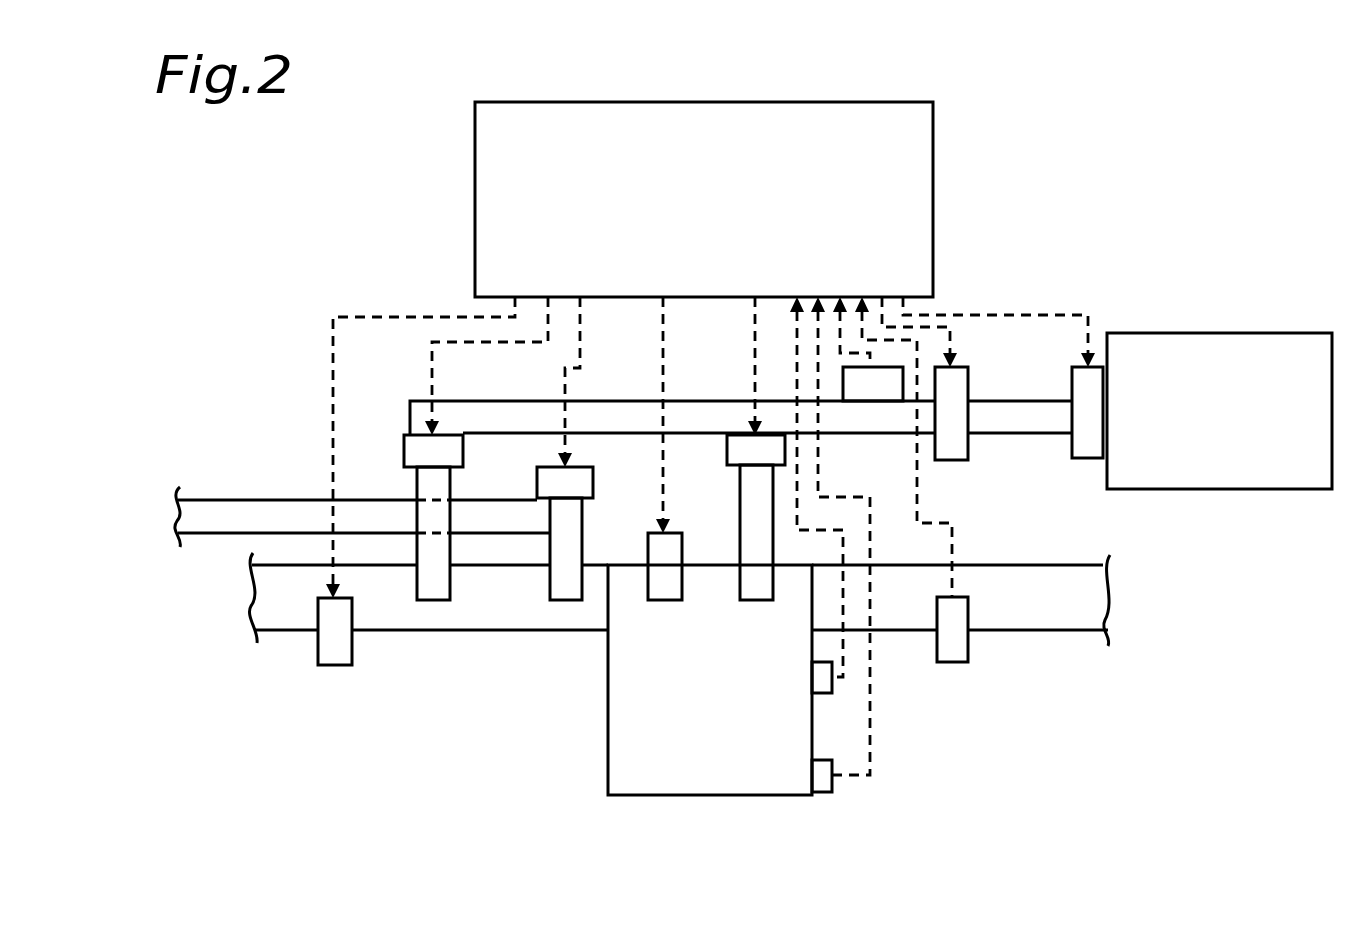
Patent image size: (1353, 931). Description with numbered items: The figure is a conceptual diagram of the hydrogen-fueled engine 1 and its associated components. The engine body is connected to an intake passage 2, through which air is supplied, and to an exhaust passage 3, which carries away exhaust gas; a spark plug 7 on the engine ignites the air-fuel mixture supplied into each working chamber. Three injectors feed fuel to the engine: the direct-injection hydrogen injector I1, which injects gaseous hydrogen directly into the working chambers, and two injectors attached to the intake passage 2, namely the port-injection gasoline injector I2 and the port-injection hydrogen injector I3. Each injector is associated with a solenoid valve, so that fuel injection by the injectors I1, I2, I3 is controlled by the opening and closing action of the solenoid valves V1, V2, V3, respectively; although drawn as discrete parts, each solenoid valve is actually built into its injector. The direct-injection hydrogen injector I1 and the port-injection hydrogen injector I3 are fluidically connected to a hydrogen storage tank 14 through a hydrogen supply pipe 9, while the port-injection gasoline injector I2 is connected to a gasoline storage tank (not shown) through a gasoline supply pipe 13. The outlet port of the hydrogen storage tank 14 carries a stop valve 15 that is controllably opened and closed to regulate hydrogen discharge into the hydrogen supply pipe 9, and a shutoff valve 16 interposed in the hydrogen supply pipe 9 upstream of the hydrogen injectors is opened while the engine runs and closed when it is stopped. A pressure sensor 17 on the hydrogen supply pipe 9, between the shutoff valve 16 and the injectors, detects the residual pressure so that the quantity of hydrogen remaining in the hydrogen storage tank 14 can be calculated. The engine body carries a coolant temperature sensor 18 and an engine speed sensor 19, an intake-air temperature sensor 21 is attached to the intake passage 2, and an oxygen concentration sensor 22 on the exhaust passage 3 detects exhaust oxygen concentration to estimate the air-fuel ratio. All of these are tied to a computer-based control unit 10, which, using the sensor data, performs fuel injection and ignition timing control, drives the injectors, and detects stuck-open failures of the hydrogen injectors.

The hydrogen-fueled engine 1 is at (607, 757).
The intake passage 2 is at (505, 632).
The exhaust passage 3 is at (1110, 640).
The spark plug 7 is at (683, 551).
The hydrogen supply pipe 9 is at (1015, 433).
The control unit 10 is at (933, 172).
The gasoline supply pipe 13 is at (220, 497).
The hydrogen storage tank 14 is at (1288, 490).
The stop valve 15 is at (1085, 458).
The shutoff valve 16 is at (968, 380).
The pressure sensor 17 is at (878, 401).
The coolant temperature sensor 18 is at (832, 683).
The engine speed sensor 19 is at (832, 790).
The intake-air temperature sensor 21 is at (338, 665).
The oxygen concentration sensor 22 is at (968, 650).
The solenoid valve V1 is at (727, 453).
The solenoid valve V2 is at (586, 466).
The solenoid valve V3 is at (403, 456).
The direct-injection hydrogen injector I1 is at (727, 492).
The port-injection gasoline injector I2 is at (598, 553).
The port-injection hydrogen injector I3 is at (404, 488).